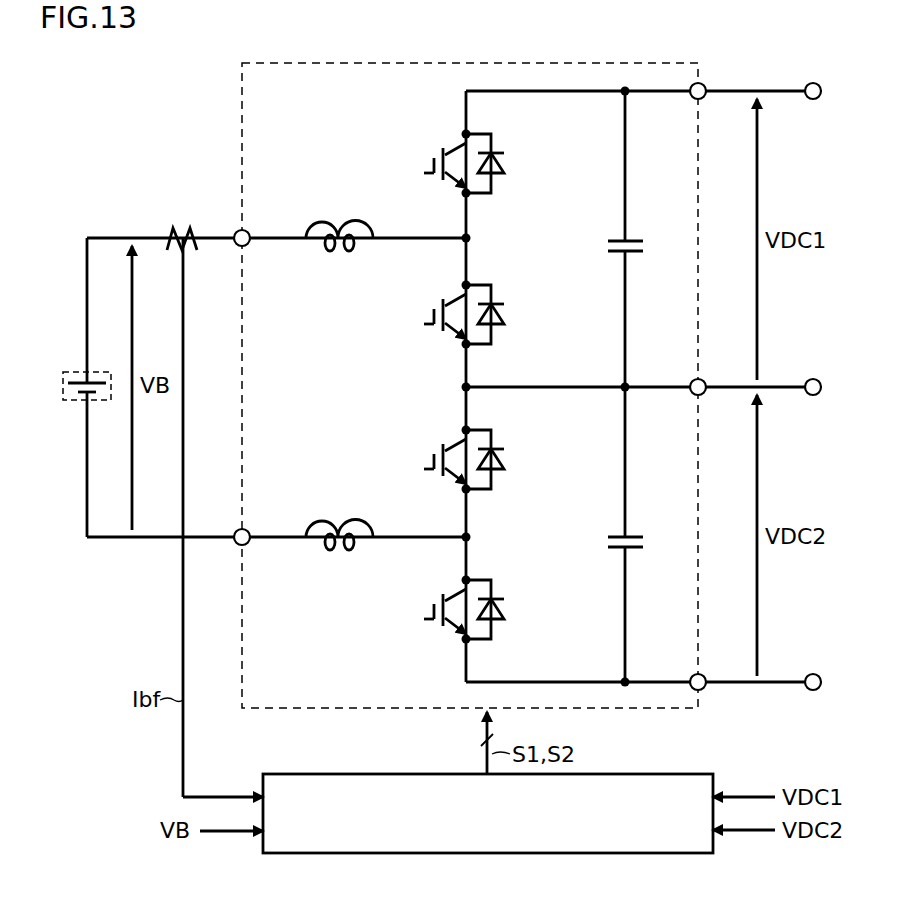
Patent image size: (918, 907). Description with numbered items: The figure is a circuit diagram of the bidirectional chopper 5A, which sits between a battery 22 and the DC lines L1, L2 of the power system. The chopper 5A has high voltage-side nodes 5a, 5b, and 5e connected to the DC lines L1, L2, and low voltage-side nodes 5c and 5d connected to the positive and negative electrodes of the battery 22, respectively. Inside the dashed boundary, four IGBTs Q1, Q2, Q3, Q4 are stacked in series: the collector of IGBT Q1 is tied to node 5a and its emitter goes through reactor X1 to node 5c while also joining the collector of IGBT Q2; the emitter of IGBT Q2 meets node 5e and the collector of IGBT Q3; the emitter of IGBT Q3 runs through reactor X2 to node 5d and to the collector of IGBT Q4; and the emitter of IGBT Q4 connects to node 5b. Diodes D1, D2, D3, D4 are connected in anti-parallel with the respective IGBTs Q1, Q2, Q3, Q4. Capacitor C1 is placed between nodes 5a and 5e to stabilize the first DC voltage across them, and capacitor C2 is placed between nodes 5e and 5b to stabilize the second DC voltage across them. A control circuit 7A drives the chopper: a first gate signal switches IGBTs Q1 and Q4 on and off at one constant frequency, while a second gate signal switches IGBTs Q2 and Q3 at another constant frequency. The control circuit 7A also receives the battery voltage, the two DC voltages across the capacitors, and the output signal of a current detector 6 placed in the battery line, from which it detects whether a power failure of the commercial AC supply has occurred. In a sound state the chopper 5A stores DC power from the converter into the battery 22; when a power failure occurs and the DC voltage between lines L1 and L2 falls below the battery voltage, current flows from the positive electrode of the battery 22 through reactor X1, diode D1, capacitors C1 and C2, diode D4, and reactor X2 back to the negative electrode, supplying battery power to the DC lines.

The bidirectional chopper 5A is at (650, 63).
The high voltage-side node 5a is at (704, 85).
The high voltage-side node 5b is at (704, 689).
The low voltage-side node 5c is at (239, 230).
The low voltage-side node 5d is at (241, 546).
The high voltage-side node 5e is at (704, 381).
The current detector 6 is at (174, 228).
The control circuit 7A is at (668, 774).
The battery 22 is at (68, 372).
The IGBT Q1 is at (424, 165).
The IGBT Q2 is at (424, 316).
The IGBT Q3 is at (424, 461).
The IGBT Q4 is at (424, 611).
The diode D1 is at (505, 165).
The diode D2 is at (505, 316).
The diode D3 is at (505, 461).
The diode D4 is at (505, 611).
The capacitor C1 is at (616, 240).
The capacitor C2 is at (616, 536).
The reactor X1 is at (340, 221).
The reactor X2 is at (340, 521).
The DC line L1 is at (813, 83).
The DC line L2 is at (813, 379).